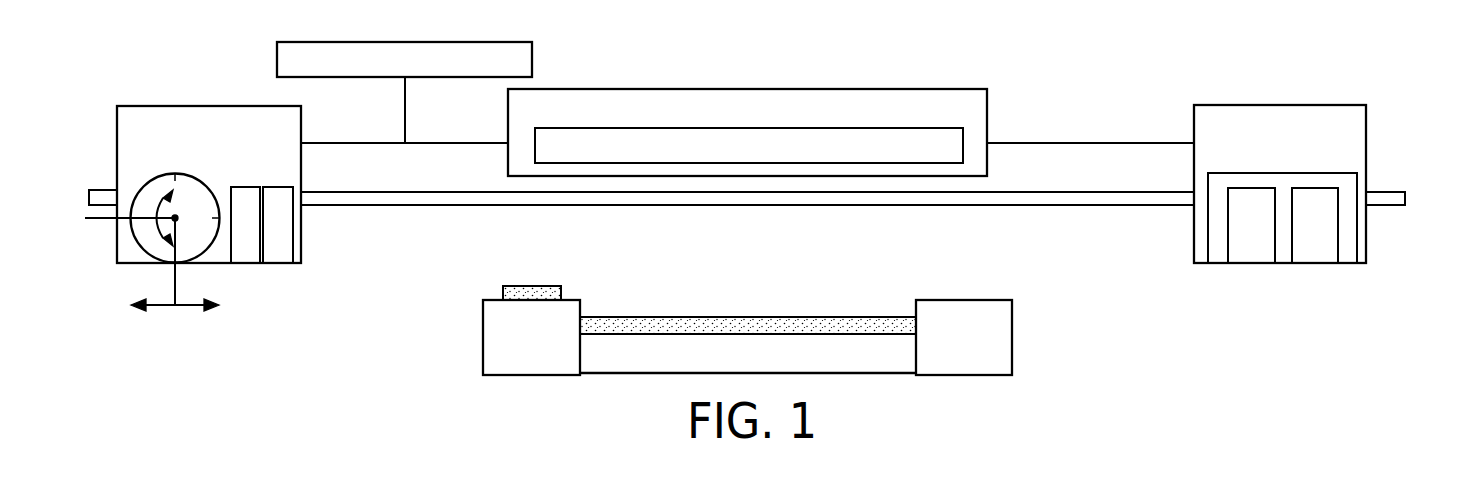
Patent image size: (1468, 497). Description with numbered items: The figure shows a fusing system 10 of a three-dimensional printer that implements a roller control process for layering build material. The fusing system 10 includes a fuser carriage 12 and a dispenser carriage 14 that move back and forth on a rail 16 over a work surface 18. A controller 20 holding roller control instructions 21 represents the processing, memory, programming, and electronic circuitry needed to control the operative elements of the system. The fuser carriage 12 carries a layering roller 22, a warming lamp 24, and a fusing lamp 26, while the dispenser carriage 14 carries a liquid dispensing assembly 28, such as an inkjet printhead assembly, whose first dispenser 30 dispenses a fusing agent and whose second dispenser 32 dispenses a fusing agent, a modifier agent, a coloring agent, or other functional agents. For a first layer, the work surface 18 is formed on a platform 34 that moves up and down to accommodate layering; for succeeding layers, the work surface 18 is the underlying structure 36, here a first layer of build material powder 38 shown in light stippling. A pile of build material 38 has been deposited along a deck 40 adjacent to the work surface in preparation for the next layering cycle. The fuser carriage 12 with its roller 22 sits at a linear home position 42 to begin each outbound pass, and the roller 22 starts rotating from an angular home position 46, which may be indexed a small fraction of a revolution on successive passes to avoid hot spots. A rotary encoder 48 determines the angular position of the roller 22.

The fusing system 10 is at (1383, 136).
The fuser carriage 12 is at (287, 126).
The dispenser carriage 14 is at (1205, 132).
The rail 16 is at (1070, 198).
The work surface 18 is at (745, 317).
The controller 20 is at (606, 98).
The roller control instructions 21 is at (770, 137).
The layering roller 22 is at (145, 245).
The warming lamp 24 is at (245, 225).
The fusing lamp 26 is at (278, 225).
The liquid dispensing assembly 28 is at (1343, 187).
The first dispenser 30 is at (1251, 225).
The second dispenser 32 is at (1315, 225).
The platform 34 is at (633, 368).
The underlying structure 36 is at (852, 320).
The build material powder 38 is at (598, 323).
The deck 40 is at (497, 355).
The linear home position 42 is at (178, 286).
The angular home position 46 is at (100, 215).
The rotary encoder 48 is at (277, 62).